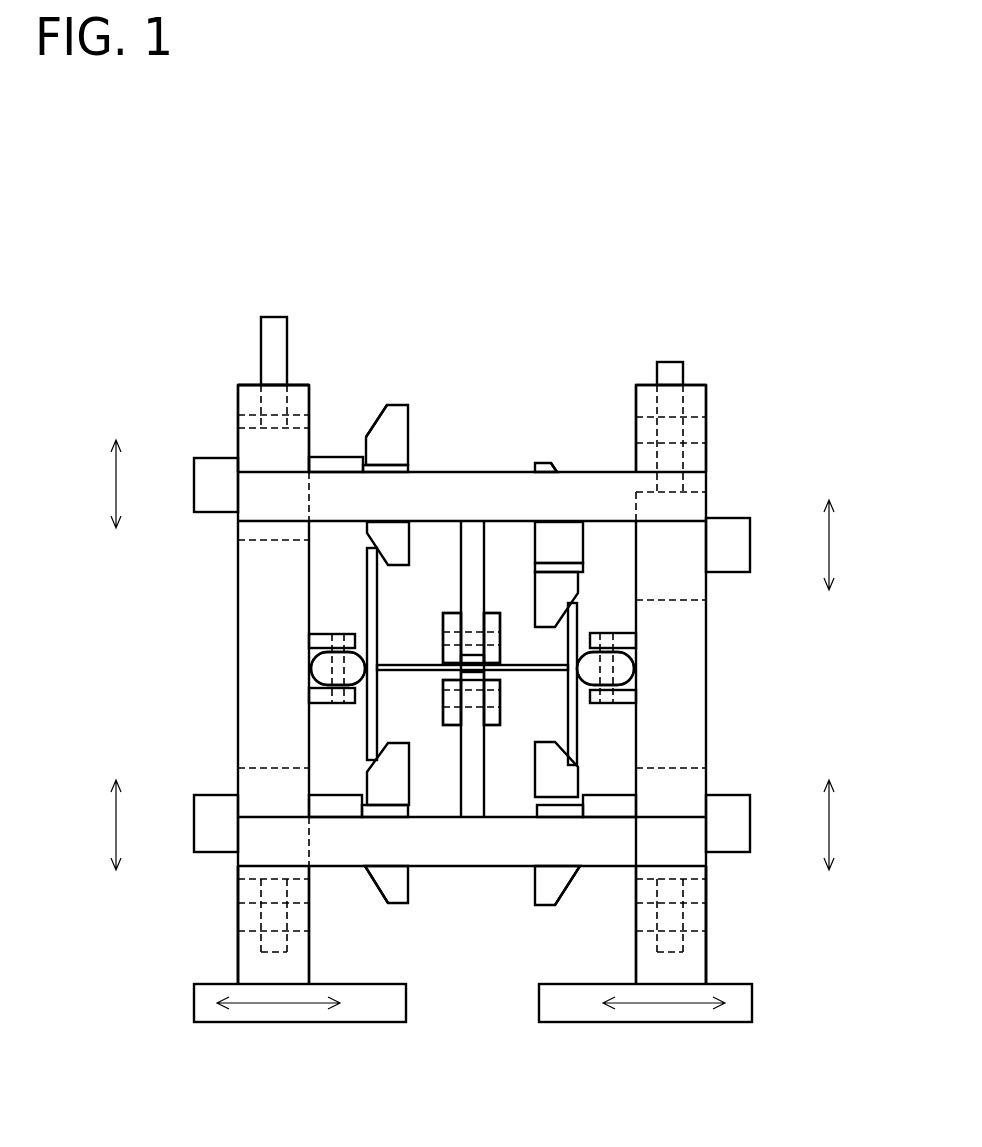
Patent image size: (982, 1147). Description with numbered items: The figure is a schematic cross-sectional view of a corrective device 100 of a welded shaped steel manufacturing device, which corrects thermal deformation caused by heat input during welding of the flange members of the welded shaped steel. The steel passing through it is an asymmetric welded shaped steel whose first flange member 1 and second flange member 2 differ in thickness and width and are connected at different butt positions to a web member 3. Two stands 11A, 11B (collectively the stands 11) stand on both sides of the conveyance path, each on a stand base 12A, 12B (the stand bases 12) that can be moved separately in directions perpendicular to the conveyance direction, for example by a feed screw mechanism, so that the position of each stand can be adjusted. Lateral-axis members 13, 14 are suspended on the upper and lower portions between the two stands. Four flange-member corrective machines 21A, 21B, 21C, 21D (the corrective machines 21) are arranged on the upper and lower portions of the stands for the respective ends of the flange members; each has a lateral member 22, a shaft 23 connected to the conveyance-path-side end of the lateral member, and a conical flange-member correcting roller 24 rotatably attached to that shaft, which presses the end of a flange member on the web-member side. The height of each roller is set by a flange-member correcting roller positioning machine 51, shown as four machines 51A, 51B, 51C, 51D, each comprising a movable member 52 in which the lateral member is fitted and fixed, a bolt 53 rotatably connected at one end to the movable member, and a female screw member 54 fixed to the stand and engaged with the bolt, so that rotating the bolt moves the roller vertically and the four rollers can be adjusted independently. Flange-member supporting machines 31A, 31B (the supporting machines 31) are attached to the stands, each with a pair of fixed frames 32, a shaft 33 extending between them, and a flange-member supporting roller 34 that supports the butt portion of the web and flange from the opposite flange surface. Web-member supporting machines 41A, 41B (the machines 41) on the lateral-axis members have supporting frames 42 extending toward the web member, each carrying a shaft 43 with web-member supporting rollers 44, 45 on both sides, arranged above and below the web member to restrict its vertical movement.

The corrective device 100 is at (222, 244).
The first flange member 1 is at (368, 575).
The second flange member 2 is at (578, 620).
The web member 3 is at (515, 675).
The stand 11 is at (474, 684).
The stand 11A is at (240, 960).
The stand 11B is at (700, 960).
The stand base 12 is at (473, 1031).
The stand base 12A is at (263, 1025).
The stand base 12B is at (665, 1025).
The lateral-axis member 13 is at (466, 488).
The lateral-axis member 14 is at (440, 855).
The flange-member corrective machine 21 is at (472, 657).
The flange-member corrective machine 21A is at (398, 400).
The flange-member corrective machine 21B is at (396, 905).
The flange-member corrective machine 21C is at (547, 462).
The flange-member corrective machine 21D is at (545, 905).
The lateral member 22 is at (200, 481).
The shaft 23 is at (410, 467).
The flange-member correcting roller 24 is at (385, 425).
The flange-member supporting machine 31 is at (471, 670).
The flange-member supporting machine 31A is at (315, 655).
The flange-member supporting machine 31B is at (627, 660).
The fixed frame 32 is at (322, 634).
The shaft 33 is at (344, 705).
The flange-member supporting roller 34 is at (315, 672).
The web-member supporting machine 41 is at (442, 669).
The web-member supporting machine 41A is at (443, 650).
The web-member supporting machine 41B is at (443, 688).
The supporting frame 42 is at (462, 557).
The shaft 43 is at (500, 640).
The web-member supporting roller 44 is at (452, 613).
The web-member supporting roller 45 is at (490, 613).
The flange-member correcting roller positioning machine 51 is at (472, 684).
The flange-member correcting roller positioning machine 51A is at (240, 535).
The flange-member correcting roller positioning machine 51B is at (245, 785).
The flange-member correcting roller positioning machine 51C is at (690, 580).
The flange-member correcting roller positioning machine 51D is at (706, 785).
The movable member 52 is at (245, 447).
The bolt 53 is at (270, 352).
The female screw member 54 is at (240, 422).